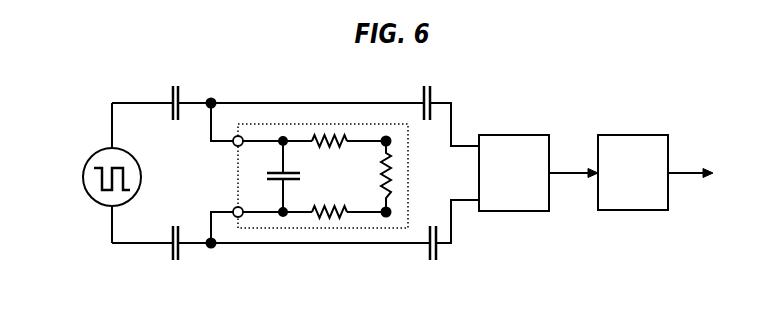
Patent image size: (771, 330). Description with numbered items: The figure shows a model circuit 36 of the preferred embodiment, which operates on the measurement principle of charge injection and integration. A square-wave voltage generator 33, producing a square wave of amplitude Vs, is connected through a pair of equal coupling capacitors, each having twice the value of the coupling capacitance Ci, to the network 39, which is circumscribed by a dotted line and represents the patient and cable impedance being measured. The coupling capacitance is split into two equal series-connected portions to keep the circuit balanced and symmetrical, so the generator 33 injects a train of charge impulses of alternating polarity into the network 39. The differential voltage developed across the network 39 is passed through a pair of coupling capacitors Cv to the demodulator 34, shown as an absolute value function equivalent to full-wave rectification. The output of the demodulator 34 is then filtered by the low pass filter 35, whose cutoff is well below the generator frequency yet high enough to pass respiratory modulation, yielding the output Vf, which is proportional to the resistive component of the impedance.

The voltage generator 33 is at (103, 205).
The demodulator 34 is at (515, 135).
The low pass filter 35 is at (625, 135).
The circuit 36 is at (527, 280).
The network 39 is at (360, 228).